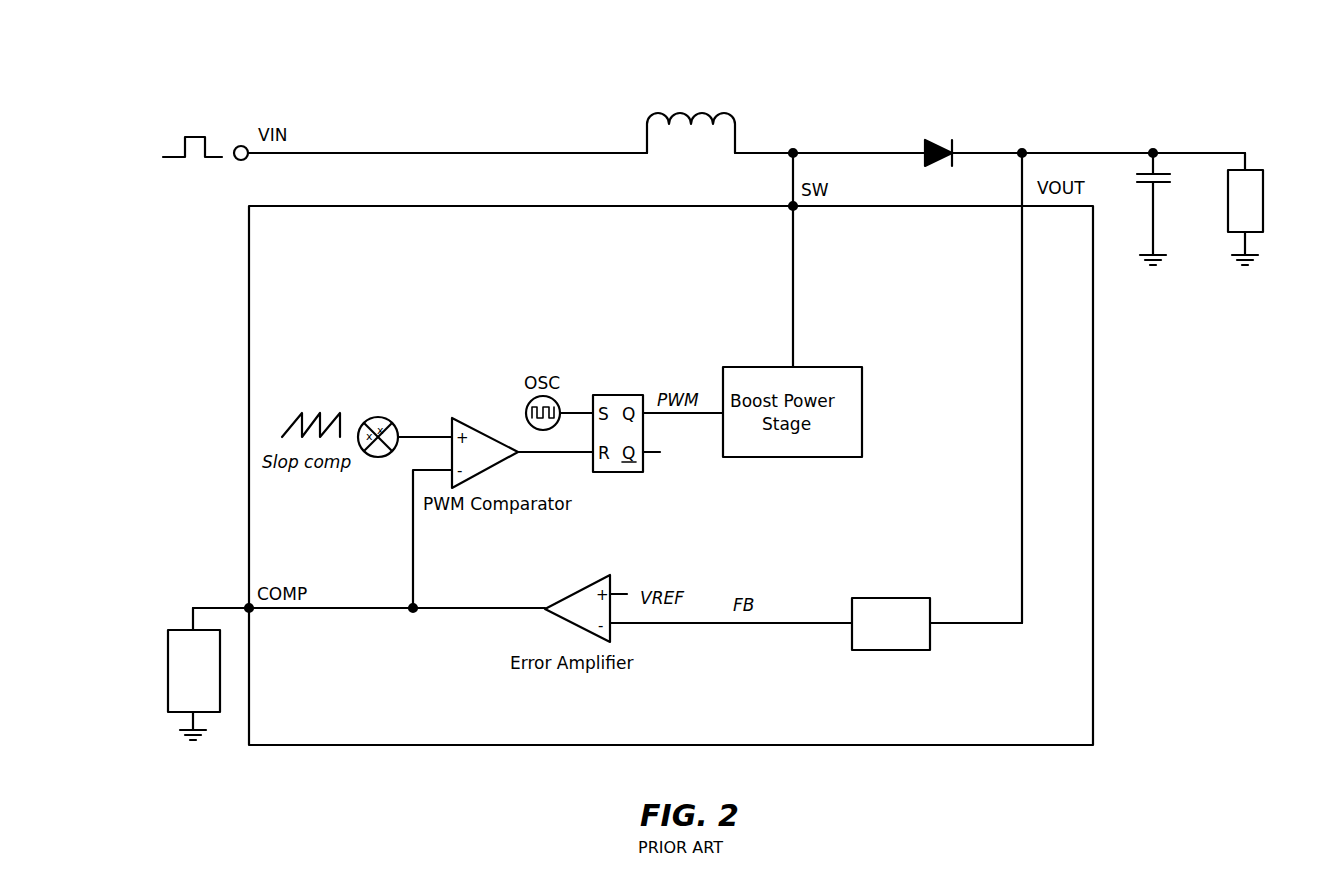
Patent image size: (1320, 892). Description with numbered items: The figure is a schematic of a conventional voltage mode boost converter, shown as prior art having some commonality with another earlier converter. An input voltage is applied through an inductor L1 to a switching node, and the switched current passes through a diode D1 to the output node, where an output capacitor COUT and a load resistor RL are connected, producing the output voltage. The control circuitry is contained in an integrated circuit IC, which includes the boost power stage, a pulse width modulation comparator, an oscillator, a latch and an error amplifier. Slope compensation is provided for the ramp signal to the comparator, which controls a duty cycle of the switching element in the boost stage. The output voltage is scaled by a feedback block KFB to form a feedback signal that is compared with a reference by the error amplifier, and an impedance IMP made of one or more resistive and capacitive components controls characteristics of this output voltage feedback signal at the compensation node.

The inductor L1 is at (691, 137).
The diode D1 is at (938, 140).
The output capacitor COUT is at (1149, 221).
The load resistor RL is at (1245, 209).
The integrated circuit IC is at (671, 475).
The impedance IMP is at (168, 670).
The feedback gain block KFB is at (891, 624).